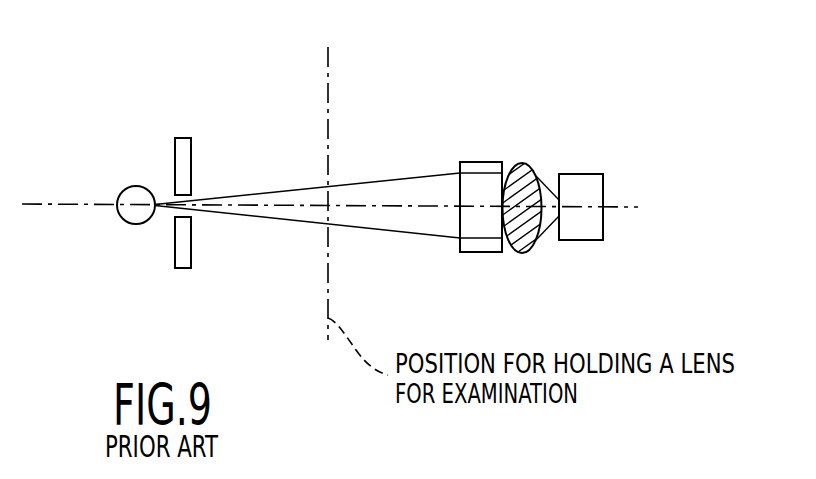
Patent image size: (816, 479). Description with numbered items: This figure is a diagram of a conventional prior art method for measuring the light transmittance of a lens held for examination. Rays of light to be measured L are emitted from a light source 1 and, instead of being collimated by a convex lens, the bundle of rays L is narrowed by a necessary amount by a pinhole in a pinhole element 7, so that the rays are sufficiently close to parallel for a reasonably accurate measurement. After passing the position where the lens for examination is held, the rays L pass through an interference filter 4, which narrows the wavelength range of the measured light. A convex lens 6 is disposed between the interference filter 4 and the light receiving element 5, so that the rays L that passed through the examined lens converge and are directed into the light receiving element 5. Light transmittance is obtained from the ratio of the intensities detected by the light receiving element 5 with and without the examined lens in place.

The light source 1 is at (120, 191).
The pinhole element 7 is at (183, 137).
The rays of light to be measured L is at (253, 194).
The interference filter 4 is at (480, 162).
The convex lens 6 is at (530, 165).
The light receiving element 5 is at (595, 190).